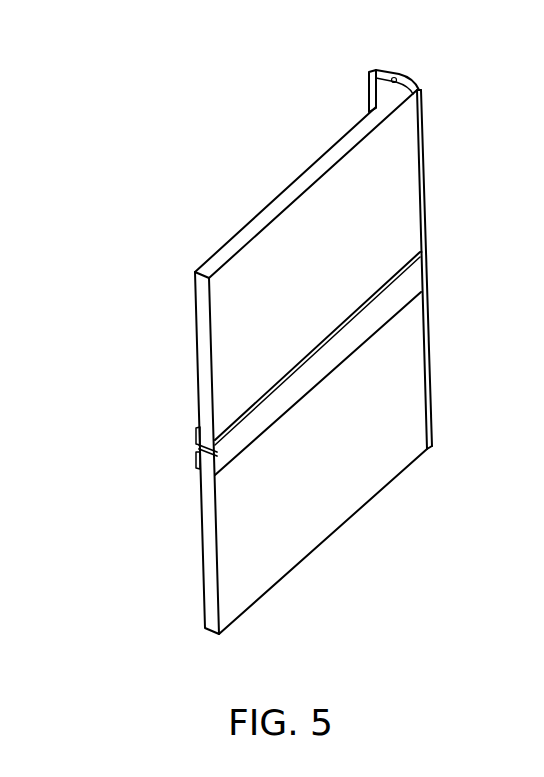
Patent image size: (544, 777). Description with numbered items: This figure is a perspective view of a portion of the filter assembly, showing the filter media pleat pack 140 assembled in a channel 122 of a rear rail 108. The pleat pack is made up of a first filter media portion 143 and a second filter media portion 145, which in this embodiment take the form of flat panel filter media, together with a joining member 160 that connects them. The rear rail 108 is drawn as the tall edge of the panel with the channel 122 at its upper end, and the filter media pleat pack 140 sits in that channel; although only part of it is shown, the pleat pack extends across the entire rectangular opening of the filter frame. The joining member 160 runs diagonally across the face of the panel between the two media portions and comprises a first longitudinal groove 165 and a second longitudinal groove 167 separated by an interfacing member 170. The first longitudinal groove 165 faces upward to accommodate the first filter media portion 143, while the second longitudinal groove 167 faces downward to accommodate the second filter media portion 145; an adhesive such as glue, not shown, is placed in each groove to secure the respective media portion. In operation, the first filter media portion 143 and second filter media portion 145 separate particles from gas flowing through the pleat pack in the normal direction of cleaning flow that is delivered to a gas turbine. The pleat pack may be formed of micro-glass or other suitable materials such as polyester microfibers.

The rear rail 108 is at (396, 77).
The channel 122 is at (376, 87).
The filter media pleat pack 140 is at (213, 557).
The first filter media portion 143 is at (230, 335).
The second filter media portion 145 is at (305, 537).
The joining member 160 is at (199, 447).
The first longitudinal groove 165 is at (197, 435).
The second longitudinal groove 167 is at (197, 462).
The interfacing member 170 is at (217, 462).